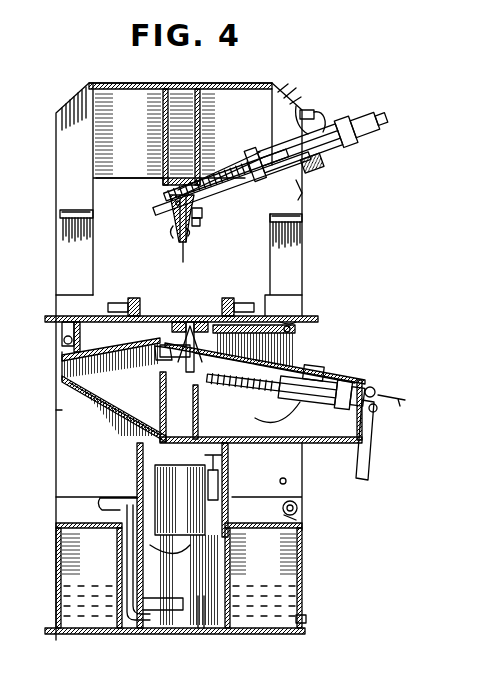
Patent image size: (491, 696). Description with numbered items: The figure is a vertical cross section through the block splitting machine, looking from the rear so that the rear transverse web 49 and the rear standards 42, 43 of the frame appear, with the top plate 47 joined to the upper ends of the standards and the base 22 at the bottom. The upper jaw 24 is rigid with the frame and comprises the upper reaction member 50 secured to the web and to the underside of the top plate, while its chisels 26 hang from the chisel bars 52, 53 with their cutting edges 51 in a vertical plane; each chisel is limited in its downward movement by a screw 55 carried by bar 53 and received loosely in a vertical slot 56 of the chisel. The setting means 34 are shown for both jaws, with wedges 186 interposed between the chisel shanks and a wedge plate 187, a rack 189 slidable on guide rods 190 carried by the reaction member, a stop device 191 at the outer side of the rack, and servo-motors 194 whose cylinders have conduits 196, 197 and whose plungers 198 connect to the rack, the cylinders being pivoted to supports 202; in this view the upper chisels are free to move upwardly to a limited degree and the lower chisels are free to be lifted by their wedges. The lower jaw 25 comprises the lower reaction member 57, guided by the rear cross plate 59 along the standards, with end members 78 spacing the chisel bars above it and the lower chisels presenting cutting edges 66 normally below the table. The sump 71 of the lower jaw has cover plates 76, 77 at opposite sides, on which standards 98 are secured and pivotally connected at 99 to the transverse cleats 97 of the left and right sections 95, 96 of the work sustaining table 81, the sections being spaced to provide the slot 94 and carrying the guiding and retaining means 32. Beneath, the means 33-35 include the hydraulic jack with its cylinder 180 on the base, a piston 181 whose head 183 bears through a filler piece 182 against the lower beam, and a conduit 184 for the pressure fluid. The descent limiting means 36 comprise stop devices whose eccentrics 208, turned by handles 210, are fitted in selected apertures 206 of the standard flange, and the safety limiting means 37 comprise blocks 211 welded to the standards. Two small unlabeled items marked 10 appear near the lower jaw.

The rear transverse web 49 is at (108, 108).
The top plate 47 is at (262, 86).
The upper reaction member 50 is at (164, 130).
The guide rods 190 is at (237, 160).
The wedges 186 is at (222, 203).
The servo-motors 194 is at (332, 150).
The supports 202 is at (368, 129).
The stop device 191 is at (306, 175).
The rack 189 is at (302, 196).
The wedge plate 187 is at (178, 188).
The conduit 197 is at (297, 108).
The conduit 196 is at (313, 112).
The chisel setting means 34 is at (340, 123).
The upper work splitting jaw 24 is at (150, 178).
The chisel bar 52 is at (172, 212).
The cutting edge 51 is at (183, 250).
The upper chisels 26 is at (173, 235).
The chisel bar 53 is at (194, 208).
The screw 55 is at (194, 225).
The vertical slot 56 is at (188, 234).
The jaw travel limiting means 37 is at (62, 213).
The blocks 211 is at (60, 222).
The rear standard 42 is at (58, 268).
The rear standard 43 is at (292, 266).
The work guiding and retaining means 32 is at (128, 298).
The right table section 96 is at (52, 315).
The slot 94 is at (178, 325).
The cutting edge 66 is at (192, 326).
The work sustaining table 81 is at (290, 318).
The left table section 95 is at (288, 316).
The transverse cleats 97 is at (62, 325).
The pivotal connection 99 is at (66, 337).
The standard 98 is at (66, 352).
The cover plate 76 is at (62, 386).
The rear cross plate 59 is at (64, 416).
The lower work splitting jaw 25 is at (102, 414).
The carrier 10 is at (156, 352).
The end members 78 is at (163, 360).
The lower reaction member 57 is at (162, 407).
The sump 71 is at (92, 410).
The plunger 198 is at (258, 416).
The cover plate 77 is at (342, 374).
The filler piece 182 is at (140, 450).
The piston head 183 is at (182, 470).
The piston 181 is at (228, 480).
The apertures 206 is at (286, 481).
The eccentric 208 is at (296, 506).
The handle 210 is at (290, 515).
The descent limiting means 36 is at (330, 513).
The conduit 184 is at (112, 572).
The chisel engaging, setting and splitting means 33-35 is at (213, 556).
The base 22 is at (70, 622).
The cylinder 180 is at (201, 634).